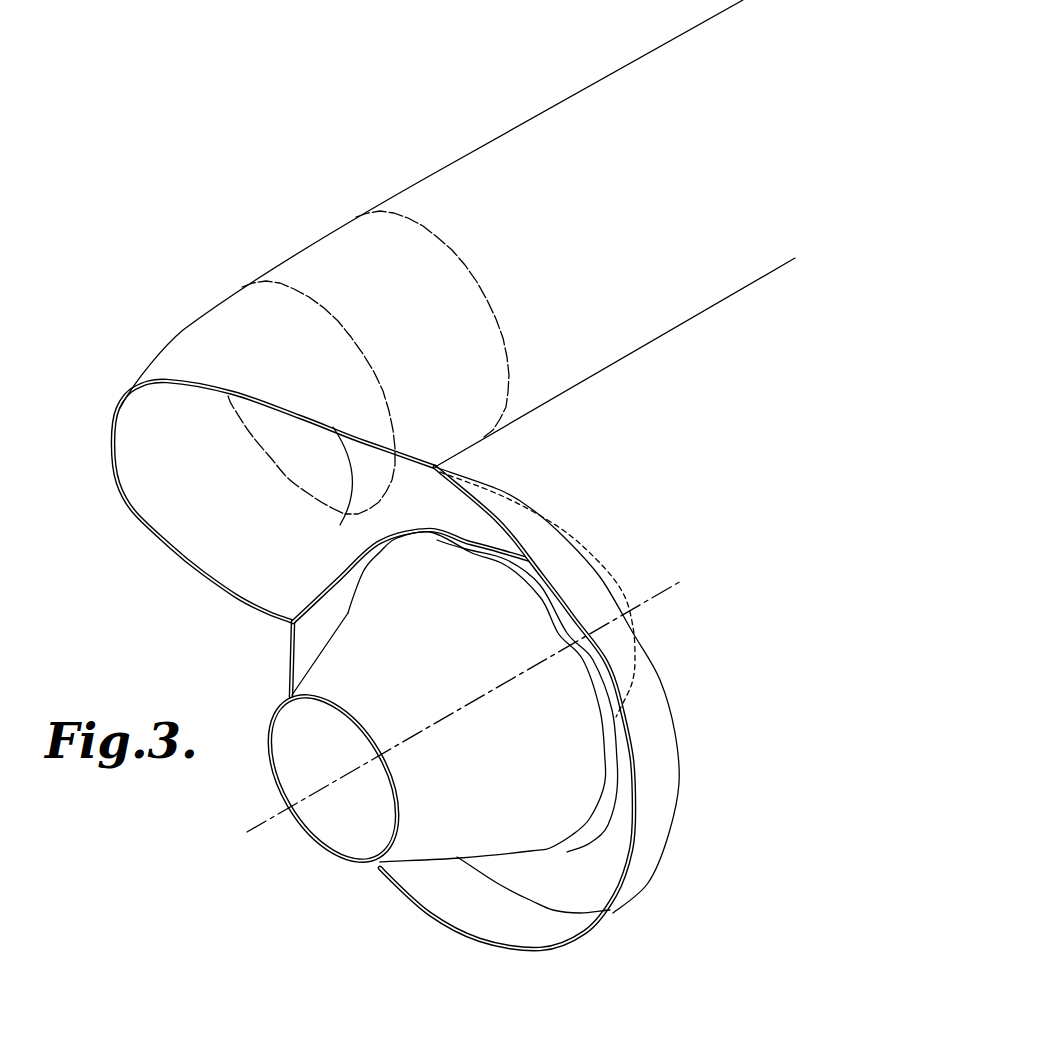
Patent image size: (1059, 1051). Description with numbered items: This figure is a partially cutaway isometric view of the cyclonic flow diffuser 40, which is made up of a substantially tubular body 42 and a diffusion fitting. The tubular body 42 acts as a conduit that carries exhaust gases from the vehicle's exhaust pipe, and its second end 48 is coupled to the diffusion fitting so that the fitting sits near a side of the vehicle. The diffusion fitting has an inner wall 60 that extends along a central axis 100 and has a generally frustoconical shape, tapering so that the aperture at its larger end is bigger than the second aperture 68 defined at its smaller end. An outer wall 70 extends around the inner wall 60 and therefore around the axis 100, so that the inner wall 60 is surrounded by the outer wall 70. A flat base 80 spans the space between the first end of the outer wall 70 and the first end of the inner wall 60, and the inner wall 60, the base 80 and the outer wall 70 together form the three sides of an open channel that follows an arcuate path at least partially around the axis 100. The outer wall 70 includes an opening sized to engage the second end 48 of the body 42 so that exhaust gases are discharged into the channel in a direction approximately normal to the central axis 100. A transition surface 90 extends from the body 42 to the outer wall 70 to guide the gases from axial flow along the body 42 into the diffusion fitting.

The cyclonic flow diffuser 40 is at (461, 92).
The tubular body 42 is at (603, 100).
The second end 48 is at (242, 335).
The inner wall 60 is at (410, 850).
The second aperture 68 is at (323, 807).
The outer wall 70 is at (655, 692).
The flat base 80 is at (570, 893).
The transition surface 90 is at (443, 490).
The central axis 100 is at (262, 822).